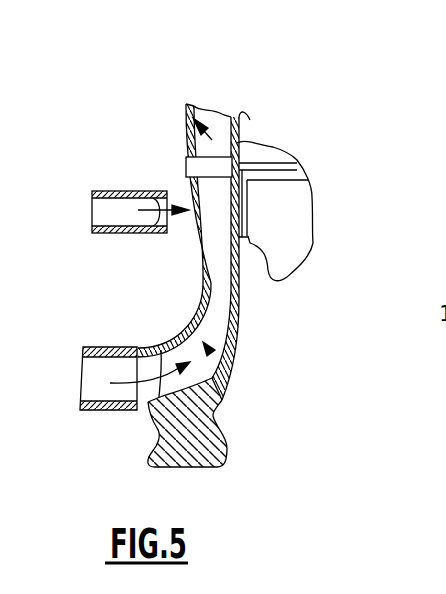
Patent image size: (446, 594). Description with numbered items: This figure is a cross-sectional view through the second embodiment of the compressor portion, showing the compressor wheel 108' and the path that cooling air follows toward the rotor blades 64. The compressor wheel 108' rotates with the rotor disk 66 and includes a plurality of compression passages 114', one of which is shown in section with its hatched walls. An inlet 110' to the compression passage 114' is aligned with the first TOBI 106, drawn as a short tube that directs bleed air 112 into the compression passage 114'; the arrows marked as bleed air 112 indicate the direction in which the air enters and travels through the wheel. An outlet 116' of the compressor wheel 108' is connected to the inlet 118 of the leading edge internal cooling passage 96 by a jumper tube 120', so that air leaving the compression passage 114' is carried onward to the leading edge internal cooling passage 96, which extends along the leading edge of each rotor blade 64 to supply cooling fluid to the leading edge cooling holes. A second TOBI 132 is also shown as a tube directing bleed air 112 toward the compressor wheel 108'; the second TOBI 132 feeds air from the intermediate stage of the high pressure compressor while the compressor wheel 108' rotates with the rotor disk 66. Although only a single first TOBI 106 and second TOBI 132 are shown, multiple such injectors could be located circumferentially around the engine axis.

The rotor blade 64 is at (275, 158).
The rotor disk 66 is at (300, 233).
The leading edge internal cooling passage 96 is at (186, 124).
The first TOBI 106 is at (102, 347).
The compressor wheel 108' is at (164, 313).
The inlet 110' is at (111, 337).
The bleed air 112 is at (180, 214).
The compression passage 114' is at (220, 404).
The outlet 116' is at (160, 193).
The inlet 118 is at (190, 131).
The jumper tube 120' is at (175, 154).
The second TOBI 132 is at (113, 191).